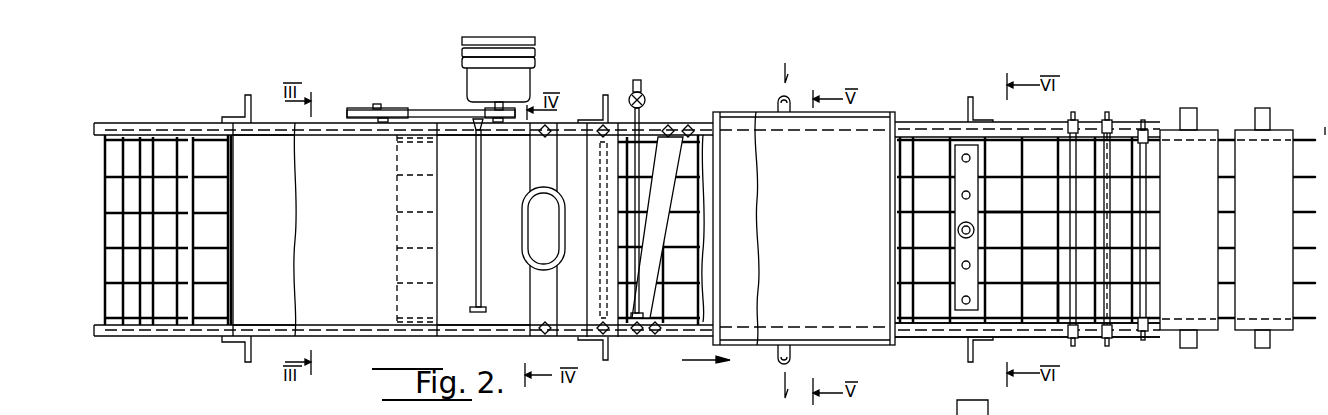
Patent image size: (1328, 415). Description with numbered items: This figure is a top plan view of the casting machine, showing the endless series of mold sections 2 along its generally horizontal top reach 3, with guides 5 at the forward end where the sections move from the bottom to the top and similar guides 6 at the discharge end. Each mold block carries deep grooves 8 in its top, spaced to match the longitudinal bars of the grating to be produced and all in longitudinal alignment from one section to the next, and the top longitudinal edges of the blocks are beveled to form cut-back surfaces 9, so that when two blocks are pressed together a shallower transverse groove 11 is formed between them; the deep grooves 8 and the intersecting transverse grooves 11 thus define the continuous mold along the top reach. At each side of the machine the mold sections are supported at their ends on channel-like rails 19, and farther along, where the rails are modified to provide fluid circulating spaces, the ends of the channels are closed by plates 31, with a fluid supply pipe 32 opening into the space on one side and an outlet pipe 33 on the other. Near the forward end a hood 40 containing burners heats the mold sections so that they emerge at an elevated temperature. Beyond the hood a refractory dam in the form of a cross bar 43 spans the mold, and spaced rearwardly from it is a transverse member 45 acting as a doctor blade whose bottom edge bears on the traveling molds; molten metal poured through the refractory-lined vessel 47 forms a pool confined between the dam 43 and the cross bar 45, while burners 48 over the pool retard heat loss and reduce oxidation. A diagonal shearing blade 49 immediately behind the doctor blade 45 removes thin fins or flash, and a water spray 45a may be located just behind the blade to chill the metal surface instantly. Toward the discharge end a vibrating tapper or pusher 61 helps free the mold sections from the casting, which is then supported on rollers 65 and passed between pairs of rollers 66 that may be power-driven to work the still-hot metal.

The endless series of mold sections 2 is at (935, 307).
The top reach 3 is at (927, 153).
The guides 5 is at (170, 336).
The guides 6 is at (1112, 330).
The grooves 8 is at (1045, 248).
The cut-back surfaces 9 is at (1055, 298).
The transverse groove 11 is at (1015, 203).
The channel-like rails 19 is at (473, 332).
The plates 31 is at (894, 343).
The fluid supply pipe 32 is at (788, 103).
The outlet pipe 33 is at (792, 350).
The hood 40 is at (342, 317).
The cross bar (refractory dam) 43 is at (425, 310).
The transverse member (doctor blade) 45 is at (605, 303).
The water spray 45a is at (640, 115).
The refractory-lined vessel 47 is at (523, 240).
The burners 48 is at (477, 187).
The diagonal shearing blade 49 is at (672, 150).
The vibrating tapper arrangement or pusher 61 is at (968, 170).
The rollers 65 is at (1145, 330).
The rollers 66 is at (1275, 133).